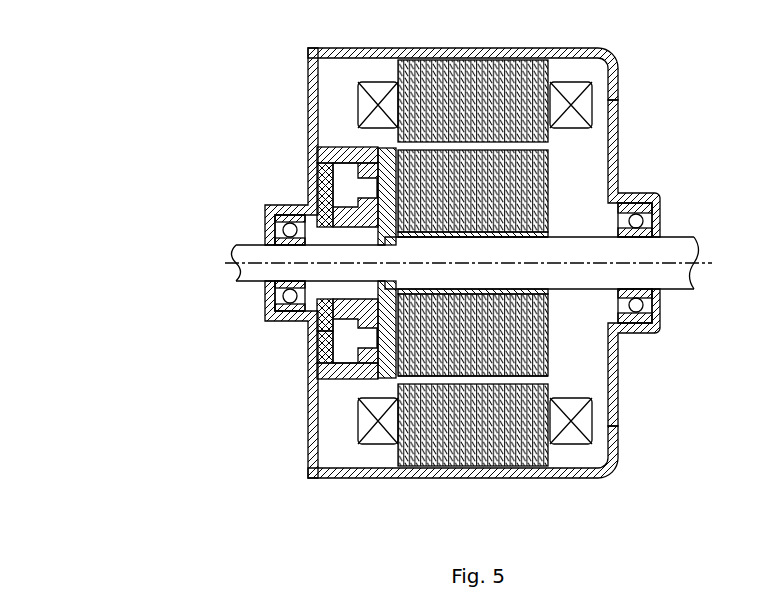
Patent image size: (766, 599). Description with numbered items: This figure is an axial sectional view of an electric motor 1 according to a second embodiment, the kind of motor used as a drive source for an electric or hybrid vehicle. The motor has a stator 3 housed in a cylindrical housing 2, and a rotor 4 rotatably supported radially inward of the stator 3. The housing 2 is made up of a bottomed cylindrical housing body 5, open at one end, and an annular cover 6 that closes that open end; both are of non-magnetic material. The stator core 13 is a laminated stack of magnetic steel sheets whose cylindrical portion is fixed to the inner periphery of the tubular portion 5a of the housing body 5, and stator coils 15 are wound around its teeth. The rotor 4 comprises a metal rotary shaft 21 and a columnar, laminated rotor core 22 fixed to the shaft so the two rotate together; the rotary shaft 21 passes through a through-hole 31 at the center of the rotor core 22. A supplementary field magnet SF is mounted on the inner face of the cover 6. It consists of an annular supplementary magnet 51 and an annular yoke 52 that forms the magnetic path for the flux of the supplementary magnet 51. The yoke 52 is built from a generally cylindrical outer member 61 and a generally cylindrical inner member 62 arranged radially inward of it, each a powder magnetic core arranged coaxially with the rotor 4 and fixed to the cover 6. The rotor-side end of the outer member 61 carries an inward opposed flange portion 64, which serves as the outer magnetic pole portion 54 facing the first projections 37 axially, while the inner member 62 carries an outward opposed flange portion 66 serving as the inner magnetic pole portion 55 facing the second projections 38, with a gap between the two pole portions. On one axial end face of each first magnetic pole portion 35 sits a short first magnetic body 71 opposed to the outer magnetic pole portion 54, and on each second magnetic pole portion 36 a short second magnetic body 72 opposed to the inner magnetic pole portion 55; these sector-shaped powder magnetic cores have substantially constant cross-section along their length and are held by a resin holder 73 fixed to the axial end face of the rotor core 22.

The electric motor 1 is at (240, 52).
The housing 2 is at (309, 49).
The stator 3 is at (400, 50).
The rotor 4 is at (367, 285).
The housing body 5 is at (617, 63).
The tubular portion 5a is at (463, 50).
The cover 6 is at (308, 70).
The stator core 13 is at (508, 58).
The stator coils 15 is at (572, 85).
The rotary shaft 21 is at (244, 246).
The rotor core 22 is at (549, 376).
The through-hole 31 is at (537, 237).
The first magnetic pole portion 35 is at (549, 192).
The second magnetic pole portion 36 is at (549, 343).
The first projections 37 is at (472, 247).
The second projections 38 is at (471, 280).
The supplementary magnet 51 is at (317, 183).
The yoke 52 is at (250, 334).
The outer magnetic pole portion 54 is at (313, 155).
The inner magnetic pole portion 55 is at (317, 371).
The outer member 61 is at (317, 364).
The inner member 62 is at (312, 320).
The opposed flange portion 64 is at (365, 163).
The opposed flange portion 66 is at (365, 365).
The first magnetic body 71 is at (396, 249).
The second magnetic body 72 is at (394, 273).
The holder 73 is at (384, 380).
The supplementary field magnet SF is at (318, 160).